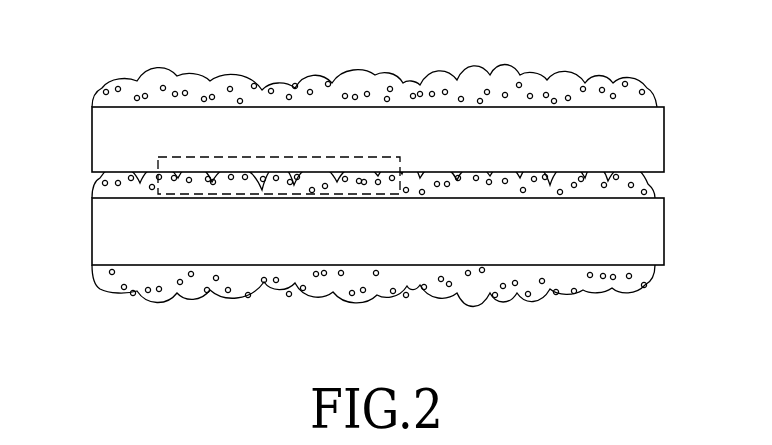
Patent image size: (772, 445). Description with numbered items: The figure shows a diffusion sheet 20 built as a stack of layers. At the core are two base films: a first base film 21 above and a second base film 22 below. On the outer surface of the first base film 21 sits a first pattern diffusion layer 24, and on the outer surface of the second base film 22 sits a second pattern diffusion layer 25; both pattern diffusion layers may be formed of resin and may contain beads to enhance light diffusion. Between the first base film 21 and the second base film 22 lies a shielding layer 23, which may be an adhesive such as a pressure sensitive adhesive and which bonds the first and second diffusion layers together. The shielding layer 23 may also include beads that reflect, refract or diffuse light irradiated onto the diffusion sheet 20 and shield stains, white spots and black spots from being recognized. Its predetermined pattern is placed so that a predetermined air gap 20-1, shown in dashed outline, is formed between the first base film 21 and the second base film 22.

The diffusion sheet 20 is at (365, 33).
The air gap 20-1 is at (174, 157).
The first base film 21 is at (664, 132).
The second base film 22 is at (664, 233).
The shielding layer 23 is at (657, 183).
The first pattern diffusion layer 24 is at (657, 88).
The second pattern diffusion layer 25 is at (657, 290).